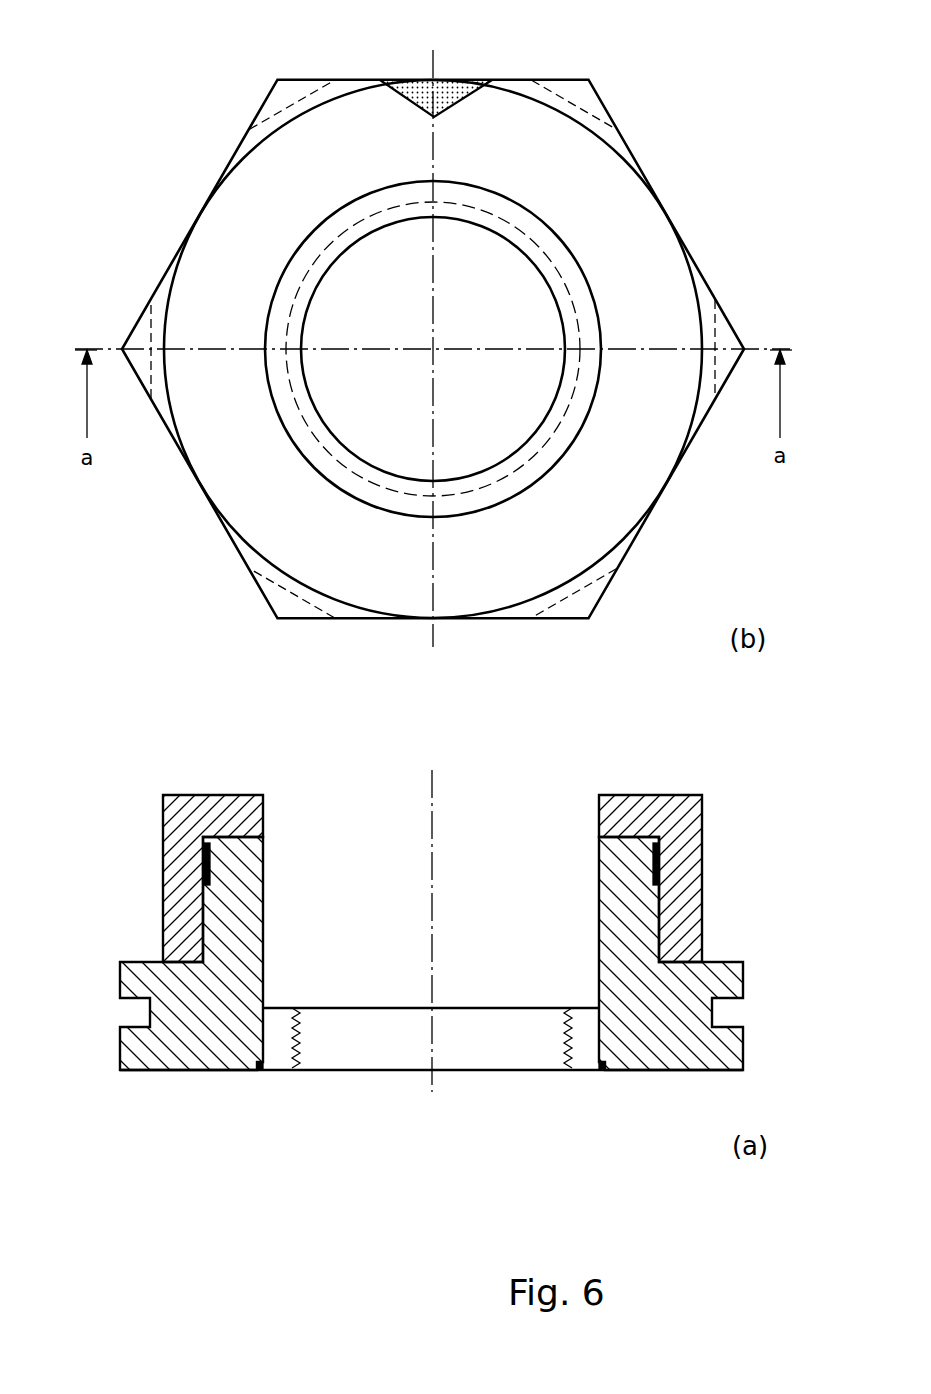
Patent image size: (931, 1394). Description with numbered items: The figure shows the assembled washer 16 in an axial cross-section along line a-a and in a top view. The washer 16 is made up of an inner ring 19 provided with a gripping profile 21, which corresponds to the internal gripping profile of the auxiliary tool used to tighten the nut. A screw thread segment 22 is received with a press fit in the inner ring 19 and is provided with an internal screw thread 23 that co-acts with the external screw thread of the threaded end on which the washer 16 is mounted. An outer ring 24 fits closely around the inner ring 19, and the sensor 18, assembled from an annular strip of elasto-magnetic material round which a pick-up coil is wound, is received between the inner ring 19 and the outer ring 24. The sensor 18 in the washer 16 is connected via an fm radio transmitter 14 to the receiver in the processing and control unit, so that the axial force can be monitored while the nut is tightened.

The fm radio transmitter 14 is at (435, 98).
The assembled washer 16 is at (225, 590).
The sensor 18 is at (660, 862).
The inner ring 19 is at (613, 557).
The gripping profile 21 is at (697, 432).
The screw thread segment 22 is at (572, 342).
The internal screw thread 23 is at (560, 307).
The outer ring 24 is at (638, 230).